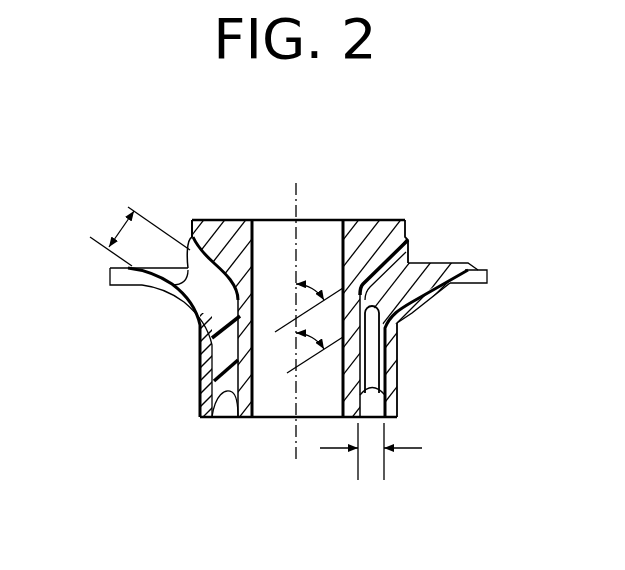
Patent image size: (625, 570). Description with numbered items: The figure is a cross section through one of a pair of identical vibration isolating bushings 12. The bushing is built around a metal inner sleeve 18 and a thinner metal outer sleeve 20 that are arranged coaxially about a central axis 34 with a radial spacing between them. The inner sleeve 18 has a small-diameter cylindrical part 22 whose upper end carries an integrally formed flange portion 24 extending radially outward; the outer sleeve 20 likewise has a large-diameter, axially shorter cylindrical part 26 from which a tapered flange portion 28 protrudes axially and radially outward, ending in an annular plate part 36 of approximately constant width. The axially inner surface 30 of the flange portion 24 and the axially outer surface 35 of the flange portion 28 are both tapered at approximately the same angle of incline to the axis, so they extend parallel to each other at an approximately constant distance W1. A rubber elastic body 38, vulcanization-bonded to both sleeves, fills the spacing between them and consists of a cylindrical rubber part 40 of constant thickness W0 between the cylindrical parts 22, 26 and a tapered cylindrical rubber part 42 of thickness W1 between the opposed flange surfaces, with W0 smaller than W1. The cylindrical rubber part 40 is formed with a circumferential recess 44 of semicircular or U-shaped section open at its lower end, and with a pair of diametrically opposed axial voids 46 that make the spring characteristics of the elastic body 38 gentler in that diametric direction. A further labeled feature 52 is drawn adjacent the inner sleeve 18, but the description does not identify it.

The vibration isolating bushing 12 is at (183, 186).
The inner sleeve 18 is at (390, 200).
The outer sleeve 20 is at (187, 362).
The cylindrical part 22 is at (202, 333).
The flange portion 24 is at (211, 221).
The cylindrical part 26 is at (398, 379).
The flange portion 28 is at (428, 290).
The axially inner surface 30 is at (384, 276).
The central axis 34 is at (296, 205).
The axially outer surface 35 is at (430, 263).
The annular plate part 36 is at (488, 276).
The rubber elastic body 38 is at (203, 373).
The cylindrical rubber part 40 is at (198, 403).
The tapered cylindrical rubber part 42 is at (167, 293).
The recess 44 is at (222, 396).
The void 46 is at (372, 351).
The inner peripheral surface 52 is at (256, 272).
The thickness dimension W0 is at (371, 471).
The thickness dimension W1 is at (133, 234).